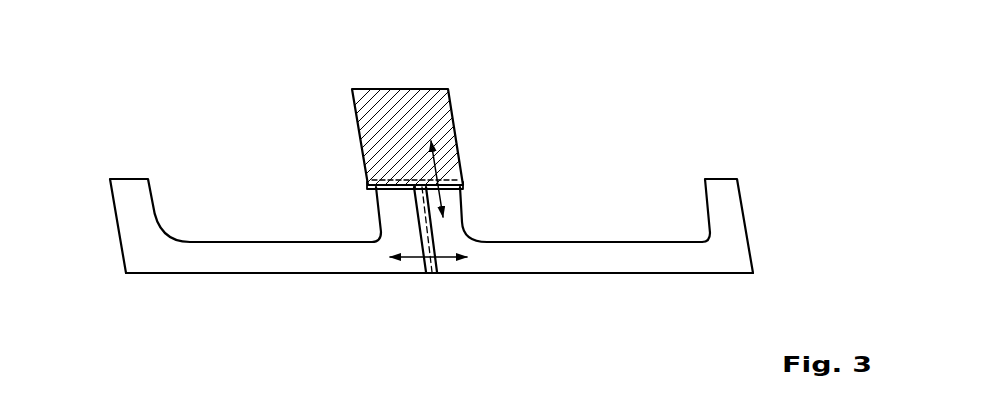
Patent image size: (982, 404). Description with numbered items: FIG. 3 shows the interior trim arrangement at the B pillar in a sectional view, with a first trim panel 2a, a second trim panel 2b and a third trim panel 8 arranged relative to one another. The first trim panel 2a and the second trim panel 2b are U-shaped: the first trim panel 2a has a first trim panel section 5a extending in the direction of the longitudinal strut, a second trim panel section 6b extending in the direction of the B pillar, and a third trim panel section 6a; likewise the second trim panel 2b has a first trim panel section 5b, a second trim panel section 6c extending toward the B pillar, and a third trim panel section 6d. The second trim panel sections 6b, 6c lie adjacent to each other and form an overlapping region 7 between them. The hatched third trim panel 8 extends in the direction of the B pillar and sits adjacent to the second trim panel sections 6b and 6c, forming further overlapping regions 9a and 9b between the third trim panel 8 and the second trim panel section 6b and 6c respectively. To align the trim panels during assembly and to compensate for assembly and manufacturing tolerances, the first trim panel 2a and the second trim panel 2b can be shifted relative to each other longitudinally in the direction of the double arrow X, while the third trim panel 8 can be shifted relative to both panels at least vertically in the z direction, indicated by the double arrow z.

The first trim panel 2a is at (666, 283).
The second trim panel 2b is at (205, 282).
The first trim panel section 5a is at (603, 262).
The first trim panel section 5b is at (270, 262).
The third trim panel section 6a is at (725, 203).
The second trim panel section 6b is at (453, 213).
The second trim panel section 6c is at (390, 210).
The third trim panel section 6d is at (132, 210).
The overlapping region 7 is at (436, 272).
The third trim panel 8 is at (365, 118).
The overlapping region 9a is at (453, 180).
The overlapping region 9b is at (370, 180).
The double arrow X is at (415, 263).
The z direction z is at (437, 167).